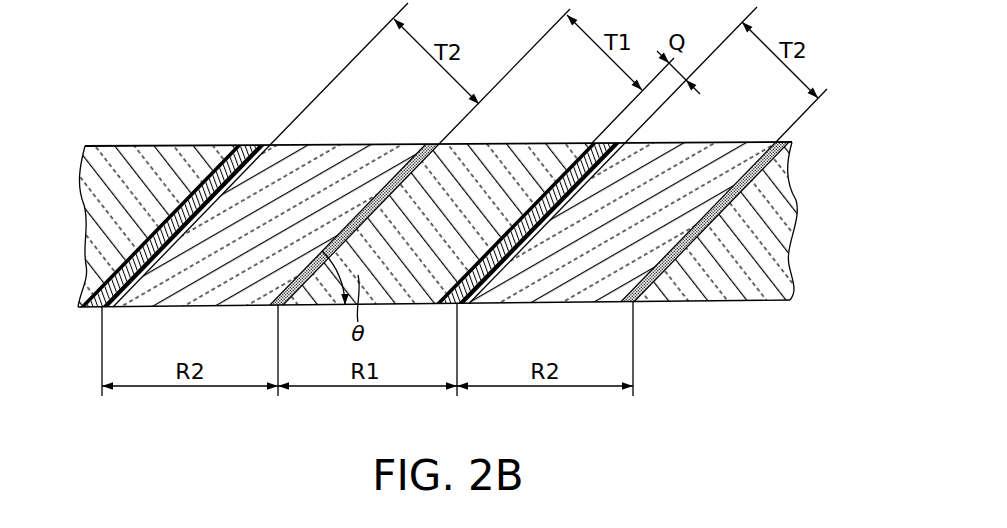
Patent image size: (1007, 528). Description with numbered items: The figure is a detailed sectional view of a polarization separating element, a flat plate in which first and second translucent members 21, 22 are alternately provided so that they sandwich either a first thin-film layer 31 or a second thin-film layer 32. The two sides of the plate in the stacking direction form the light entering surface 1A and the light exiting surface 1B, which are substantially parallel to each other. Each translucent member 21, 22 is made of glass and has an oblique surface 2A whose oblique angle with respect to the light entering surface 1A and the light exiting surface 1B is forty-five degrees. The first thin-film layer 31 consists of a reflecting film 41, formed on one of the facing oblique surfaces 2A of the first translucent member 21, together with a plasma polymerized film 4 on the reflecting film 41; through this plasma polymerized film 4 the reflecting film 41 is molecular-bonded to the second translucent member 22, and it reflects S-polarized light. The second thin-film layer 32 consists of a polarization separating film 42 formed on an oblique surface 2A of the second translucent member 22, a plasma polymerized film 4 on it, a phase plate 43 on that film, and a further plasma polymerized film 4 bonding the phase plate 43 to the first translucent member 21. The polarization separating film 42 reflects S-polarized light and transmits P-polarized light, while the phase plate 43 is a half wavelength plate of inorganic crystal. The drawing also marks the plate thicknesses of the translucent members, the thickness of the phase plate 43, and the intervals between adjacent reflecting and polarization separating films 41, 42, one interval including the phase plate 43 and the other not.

The light entering surface 1A is at (95, 265).
The light exiting surface 1B is at (122, 153).
The first translucent member 21 is at (163, 150).
The second translucent member 22 is at (355, 148).
The oblique surface 2A is at (555, 152).
The plasma polymerized film 4 is at (200, 165).
The reflecting film 41 is at (458, 144).
The polarization separating film 42 is at (263, 150).
The phase plate 43 is at (231, 170).
The first thin-film layer 31 is at (797, 134).
The second thin-film layer 32 is at (438, 312).